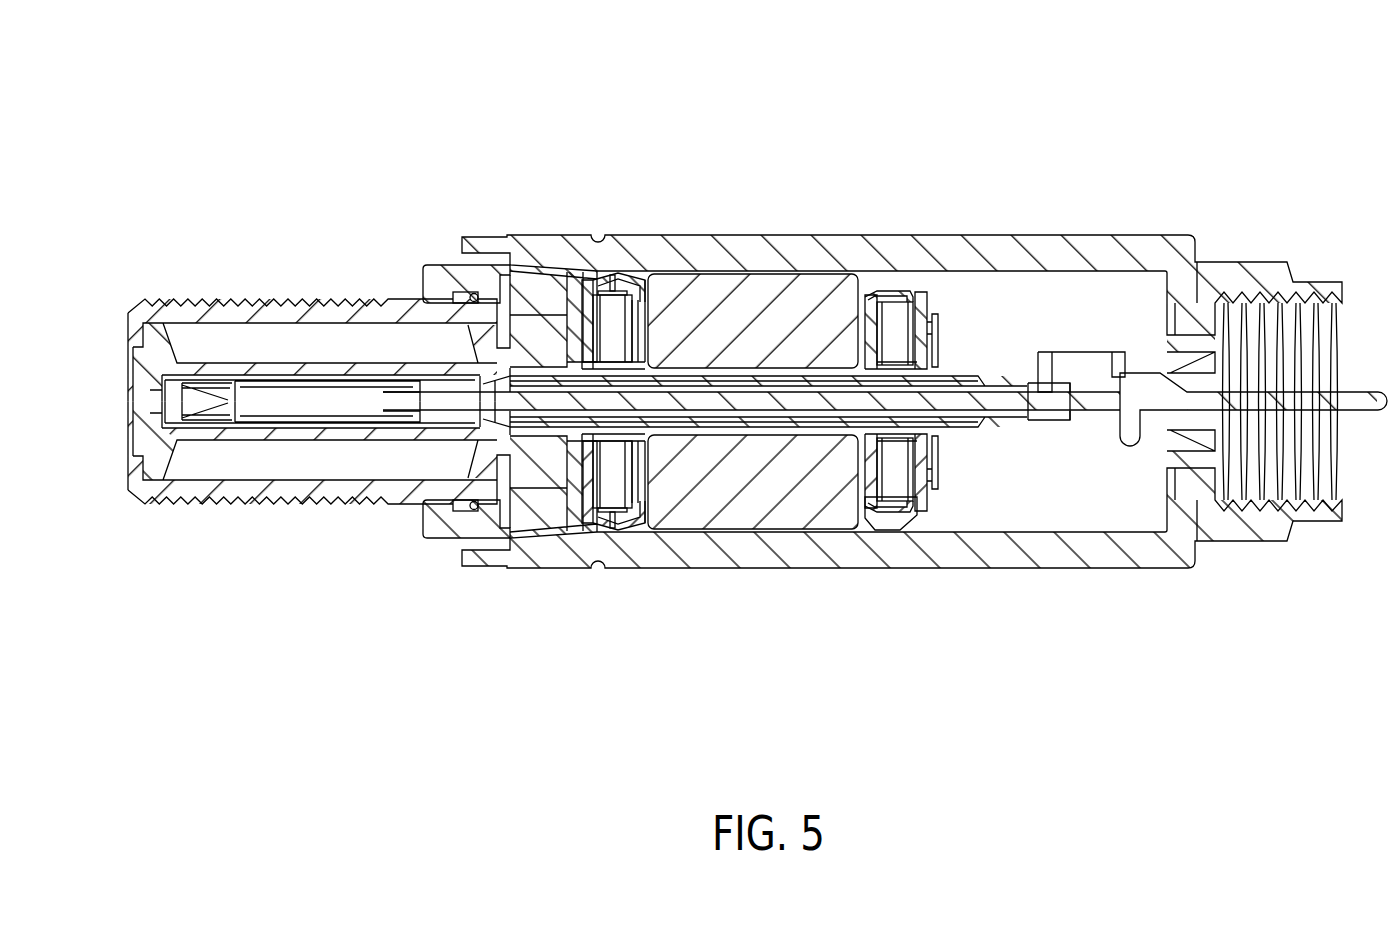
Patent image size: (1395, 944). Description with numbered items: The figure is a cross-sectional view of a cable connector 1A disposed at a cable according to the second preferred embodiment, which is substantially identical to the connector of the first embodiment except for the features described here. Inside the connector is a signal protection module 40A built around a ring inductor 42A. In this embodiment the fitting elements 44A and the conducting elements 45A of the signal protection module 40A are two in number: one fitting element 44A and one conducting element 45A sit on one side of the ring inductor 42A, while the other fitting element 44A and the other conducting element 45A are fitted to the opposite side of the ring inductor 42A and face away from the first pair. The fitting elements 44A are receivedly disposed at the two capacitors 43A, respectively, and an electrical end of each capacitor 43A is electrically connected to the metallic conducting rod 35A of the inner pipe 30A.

The cable connector 1A is at (447, 125).
The inner pipe 30A is at (131, 310).
The metallic conducting rod 35A is at (1010, 312).
The signal protection module 40A is at (944, 301).
The ring inductor 42A is at (798, 295).
The capacitor 43A is at (612, 320).
The fitting element 44A is at (578, 297).
The conducting element 45A is at (645, 273).